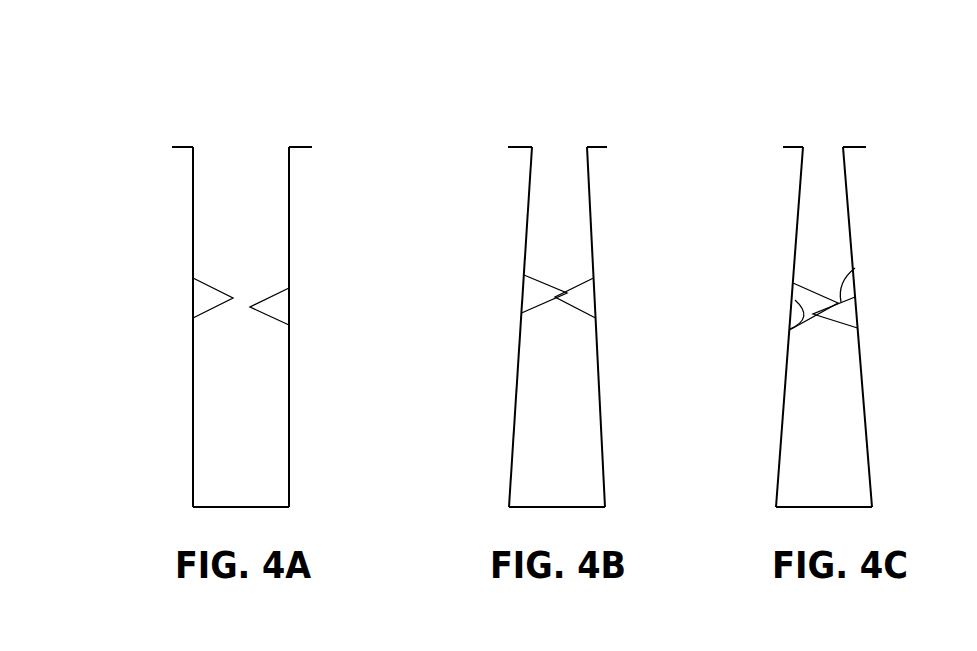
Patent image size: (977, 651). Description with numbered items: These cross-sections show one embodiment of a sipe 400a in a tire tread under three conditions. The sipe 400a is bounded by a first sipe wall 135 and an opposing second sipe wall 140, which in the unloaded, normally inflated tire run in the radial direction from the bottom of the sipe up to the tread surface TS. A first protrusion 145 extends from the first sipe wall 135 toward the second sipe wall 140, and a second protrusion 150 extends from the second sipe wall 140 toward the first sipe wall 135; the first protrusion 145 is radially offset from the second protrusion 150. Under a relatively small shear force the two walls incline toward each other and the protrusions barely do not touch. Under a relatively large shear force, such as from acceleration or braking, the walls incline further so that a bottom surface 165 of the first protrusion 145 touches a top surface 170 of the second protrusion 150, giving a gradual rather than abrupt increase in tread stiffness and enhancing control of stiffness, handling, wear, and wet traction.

In FIG. 4A, the sipe 400a is at (212, 92).
In FIG. 4B, the sipe 400a is at (545, 116).
In FIG. 4C, the sipe 400a is at (815, 128).
In FIG. 4A, the first sipe wall 135 is at (192, 208).
In FIG. 4B, the first sipe wall 135 is at (527, 208).
In FIG. 4C, the first sipe wall 135 is at (800, 197).
In FIG. 4A, the second sipe wall 140 is at (292, 250).
In FIG. 4B, the second sipe wall 140 is at (595, 250).
In FIG. 4C, the second sipe wall 140 is at (857, 220).
In FIG. 4A, the first protrusion 145 is at (200, 292).
In FIG. 4B, the first protrusion 145 is at (528, 290).
In FIG. 4C, the first protrusion 145 is at (800, 302).
In FIG. 4A, the second protrusion 150 is at (277, 307).
In FIG. 4B, the second protrusion 150 is at (583, 298).
In FIG. 4C, the second protrusion 150 is at (838, 317).
In FIG. 4C, the bottom surface 165 is at (790, 327).
In FIG. 4C, the top surface 170 is at (857, 270).
In FIG. 4A, the top surface TS is at (300, 142).
In FIG. 4B, the top surface TS is at (597, 140).
In FIG. 4C, the top surface TS is at (853, 140).